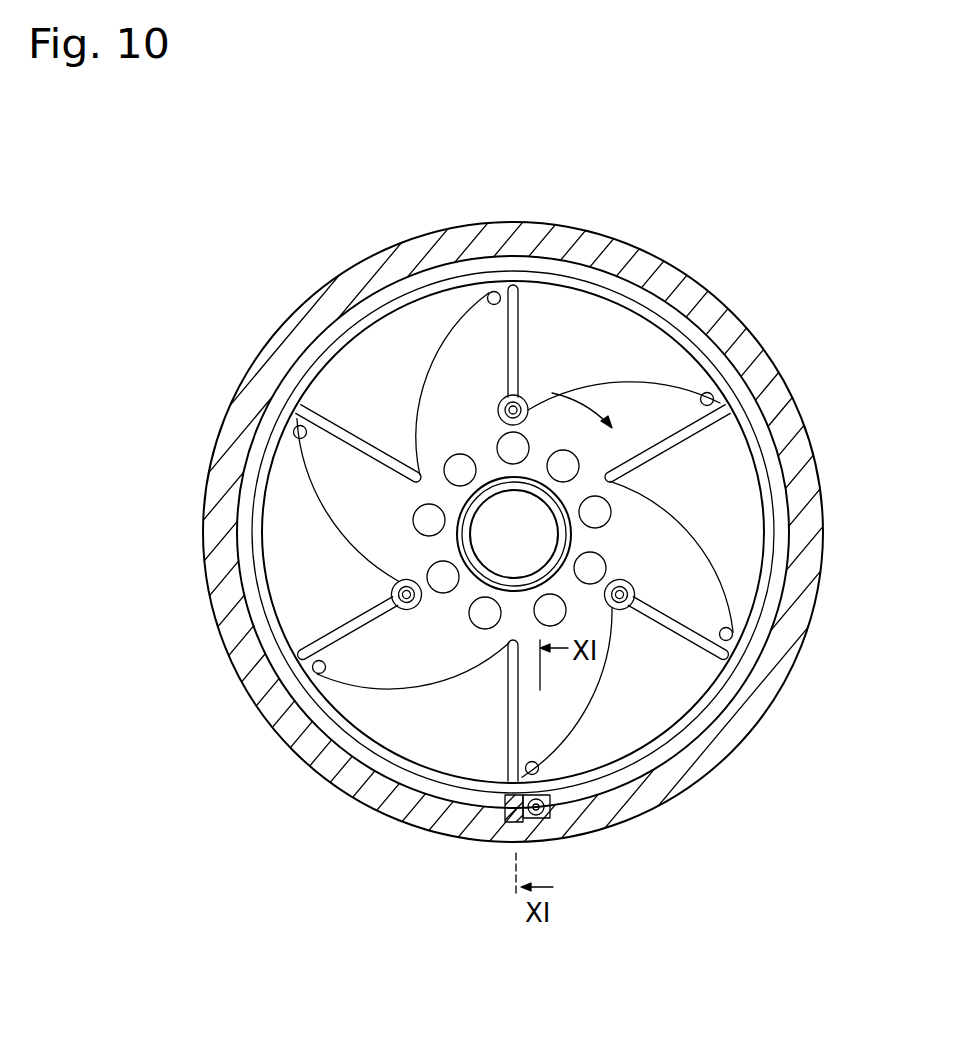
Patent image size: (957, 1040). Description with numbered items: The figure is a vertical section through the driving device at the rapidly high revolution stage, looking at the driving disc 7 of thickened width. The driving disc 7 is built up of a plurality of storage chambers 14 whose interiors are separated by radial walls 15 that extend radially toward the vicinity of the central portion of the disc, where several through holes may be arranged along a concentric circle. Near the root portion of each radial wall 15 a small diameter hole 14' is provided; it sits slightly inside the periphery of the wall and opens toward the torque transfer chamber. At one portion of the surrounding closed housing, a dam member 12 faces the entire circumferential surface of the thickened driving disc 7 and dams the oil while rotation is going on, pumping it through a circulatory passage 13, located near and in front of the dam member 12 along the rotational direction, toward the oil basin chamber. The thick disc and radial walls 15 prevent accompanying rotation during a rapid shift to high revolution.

The driving disc 7 is at (780, 499).
The dam member 12 is at (514, 823).
The circulatory passage 13 is at (545, 822).
The storage chamber 14 is at (510, 532).
The small diameter hole 14' is at (509, 533).
The radial wall 15 is at (757, 417).